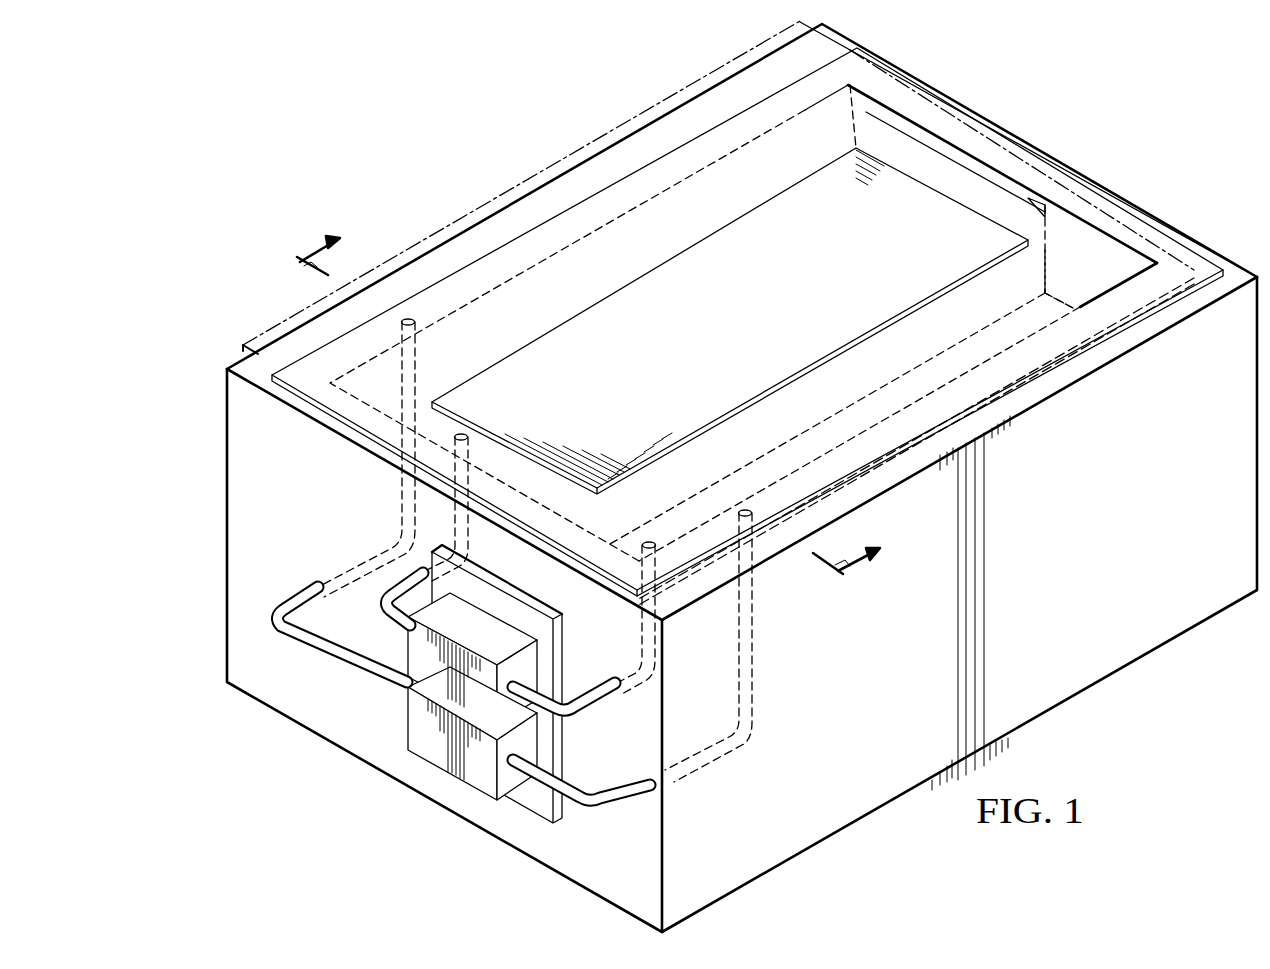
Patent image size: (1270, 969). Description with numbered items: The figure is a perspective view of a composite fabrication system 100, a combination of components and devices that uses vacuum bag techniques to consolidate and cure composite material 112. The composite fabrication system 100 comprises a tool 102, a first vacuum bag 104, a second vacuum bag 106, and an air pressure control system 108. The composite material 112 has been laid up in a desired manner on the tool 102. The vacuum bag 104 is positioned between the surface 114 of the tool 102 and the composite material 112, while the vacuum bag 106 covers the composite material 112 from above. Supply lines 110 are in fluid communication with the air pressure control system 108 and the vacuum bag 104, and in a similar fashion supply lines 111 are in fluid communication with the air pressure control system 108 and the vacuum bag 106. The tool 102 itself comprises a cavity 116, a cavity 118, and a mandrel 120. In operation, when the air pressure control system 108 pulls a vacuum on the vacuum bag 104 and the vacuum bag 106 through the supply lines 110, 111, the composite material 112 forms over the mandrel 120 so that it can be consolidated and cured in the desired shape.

The composite fabrication system 100 is at (412, 128).
The tool 102 is at (226, 540).
The vacuum bag 104 is at (512, 242).
The vacuum bag 106 is at (541, 183).
The air pressure control system 108 is at (527, 815).
The supply lines 110 is at (598, 719).
The supply lines 111 is at (598, 827).
The composite material 112 is at (712, 218).
The surface 114 is at (1010, 167).
The cavity 116 is at (790, 172).
The cavity 118 is at (1030, 271).
The mandrel 120 is at (1082, 294).